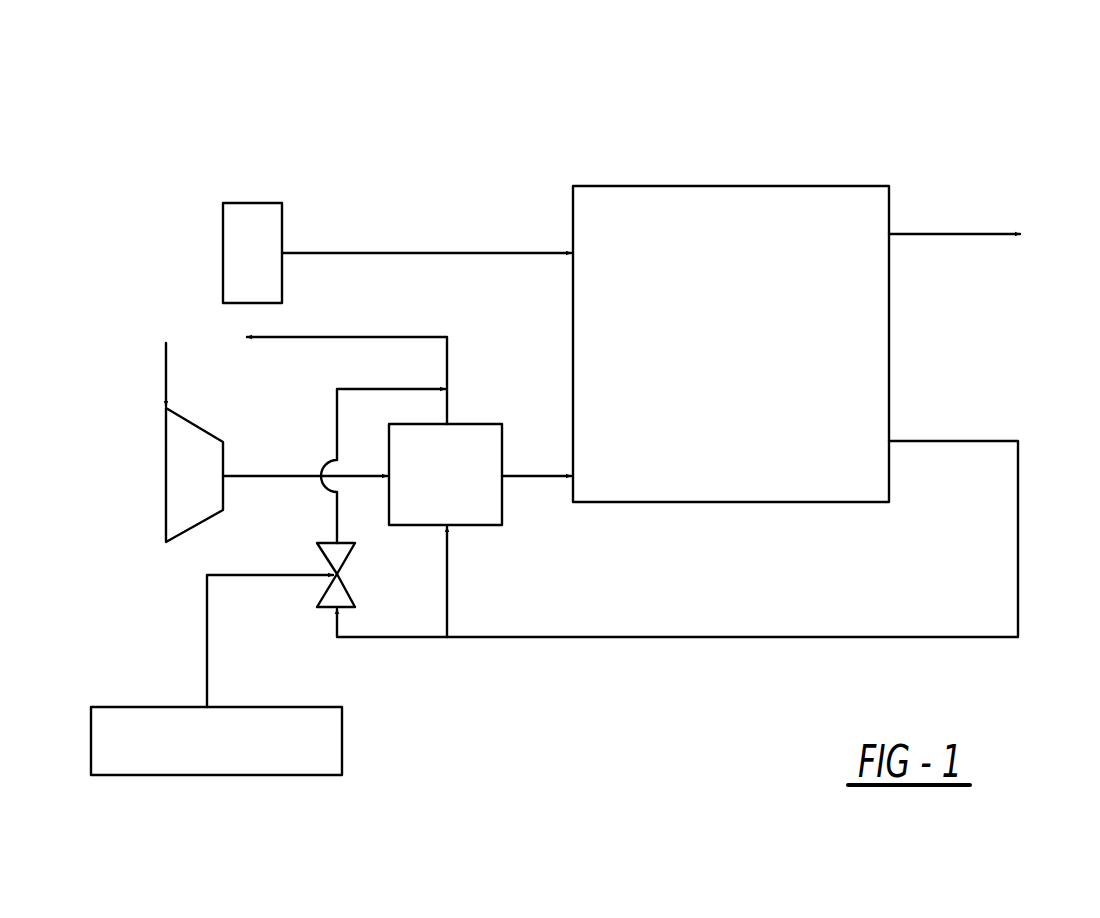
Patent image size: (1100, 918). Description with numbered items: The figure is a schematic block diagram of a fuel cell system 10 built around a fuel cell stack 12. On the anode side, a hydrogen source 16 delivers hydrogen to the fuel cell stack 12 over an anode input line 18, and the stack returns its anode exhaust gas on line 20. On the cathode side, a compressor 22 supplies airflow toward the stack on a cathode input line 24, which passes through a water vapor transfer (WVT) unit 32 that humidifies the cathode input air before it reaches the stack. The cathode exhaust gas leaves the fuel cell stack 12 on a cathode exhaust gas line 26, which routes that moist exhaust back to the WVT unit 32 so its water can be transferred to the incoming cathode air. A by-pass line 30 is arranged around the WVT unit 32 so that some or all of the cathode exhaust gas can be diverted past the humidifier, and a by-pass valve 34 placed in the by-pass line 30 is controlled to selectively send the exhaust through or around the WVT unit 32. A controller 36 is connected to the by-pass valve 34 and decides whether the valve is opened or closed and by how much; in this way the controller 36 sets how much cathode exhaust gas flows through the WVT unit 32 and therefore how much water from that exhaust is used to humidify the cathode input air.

The fuel cell system 10 is at (946, 128).
The fuel cell stack 12 is at (722, 186).
The hydrogen source 16 is at (223, 255).
The anode input line 18 is at (365, 253).
The anode exhaust gas line 20 is at (953, 234).
The compressor 22 is at (166, 475).
The cathode input line 24 is at (285, 476).
The cathode exhaust gas line 26 is at (953, 441).
The by-pass line 30 is at (337, 518).
The water vapor transfer (WVT) unit 32 is at (480, 525).
The by-pass valve 34 is at (347, 587).
The controller 36 is at (342, 743).